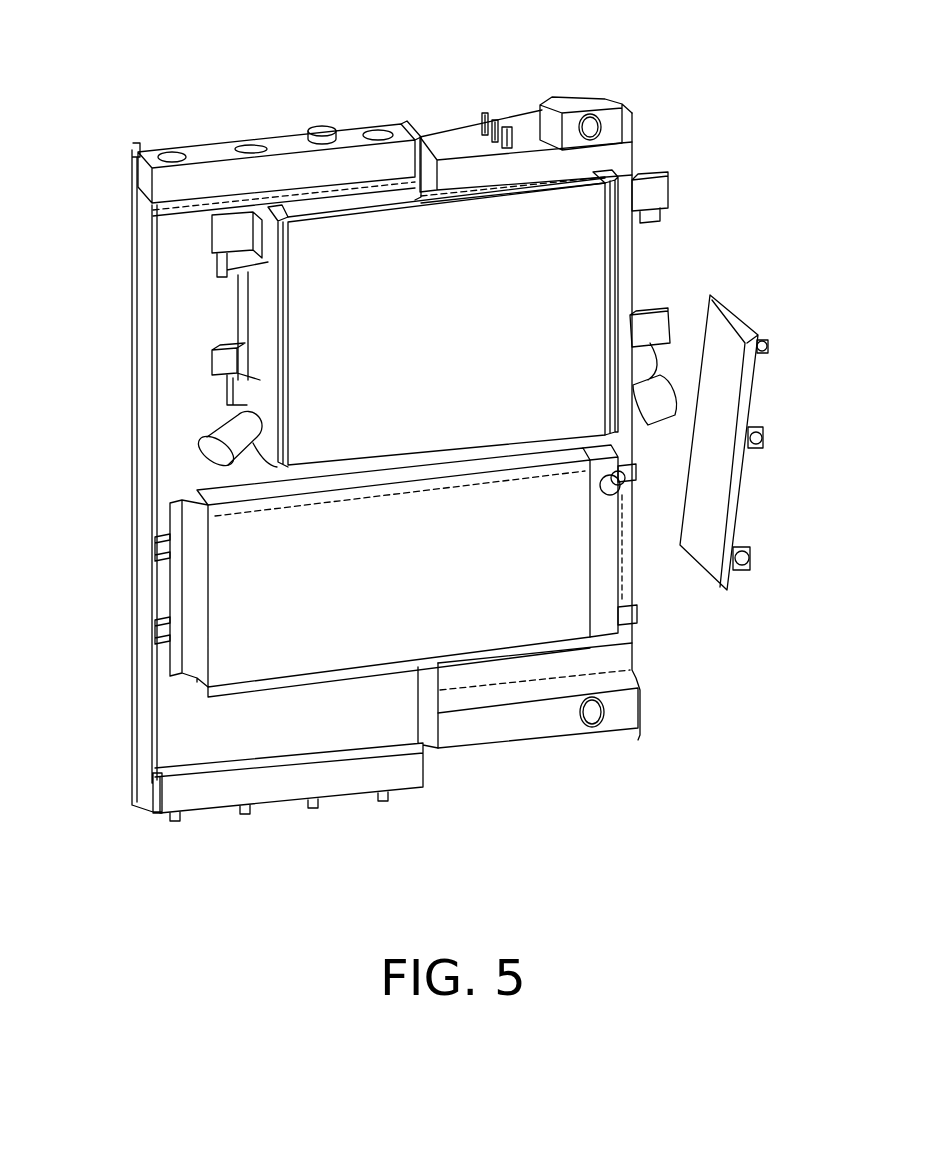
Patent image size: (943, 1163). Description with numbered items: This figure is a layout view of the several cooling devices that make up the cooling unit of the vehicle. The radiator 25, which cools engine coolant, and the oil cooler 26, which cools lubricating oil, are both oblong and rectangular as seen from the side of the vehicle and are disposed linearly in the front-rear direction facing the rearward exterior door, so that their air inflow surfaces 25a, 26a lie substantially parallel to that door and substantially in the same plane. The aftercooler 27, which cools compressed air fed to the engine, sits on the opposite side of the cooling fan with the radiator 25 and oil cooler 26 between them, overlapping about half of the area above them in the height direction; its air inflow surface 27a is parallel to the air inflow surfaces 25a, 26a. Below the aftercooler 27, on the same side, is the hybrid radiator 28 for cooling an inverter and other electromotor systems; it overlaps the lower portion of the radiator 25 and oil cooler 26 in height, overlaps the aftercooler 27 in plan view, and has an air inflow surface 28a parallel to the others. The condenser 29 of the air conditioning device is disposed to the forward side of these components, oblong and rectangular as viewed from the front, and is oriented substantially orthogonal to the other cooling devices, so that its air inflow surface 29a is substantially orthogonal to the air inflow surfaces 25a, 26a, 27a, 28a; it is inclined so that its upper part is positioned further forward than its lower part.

The radiator 25 is at (124, 182).
The air inflow surface 25a is at (182, 233).
The oil cooler 26 is at (631, 96).
The air inflow surface 26a is at (516, 167).
The aftercooler 27 is at (630, 255).
The air inflow surface 27a is at (583, 317).
The hybrid radiator 28 is at (202, 580).
The air inflow surface 28a is at (233, 607).
The condenser 29 is at (759, 321).
The air inflow surface 29a is at (742, 477).